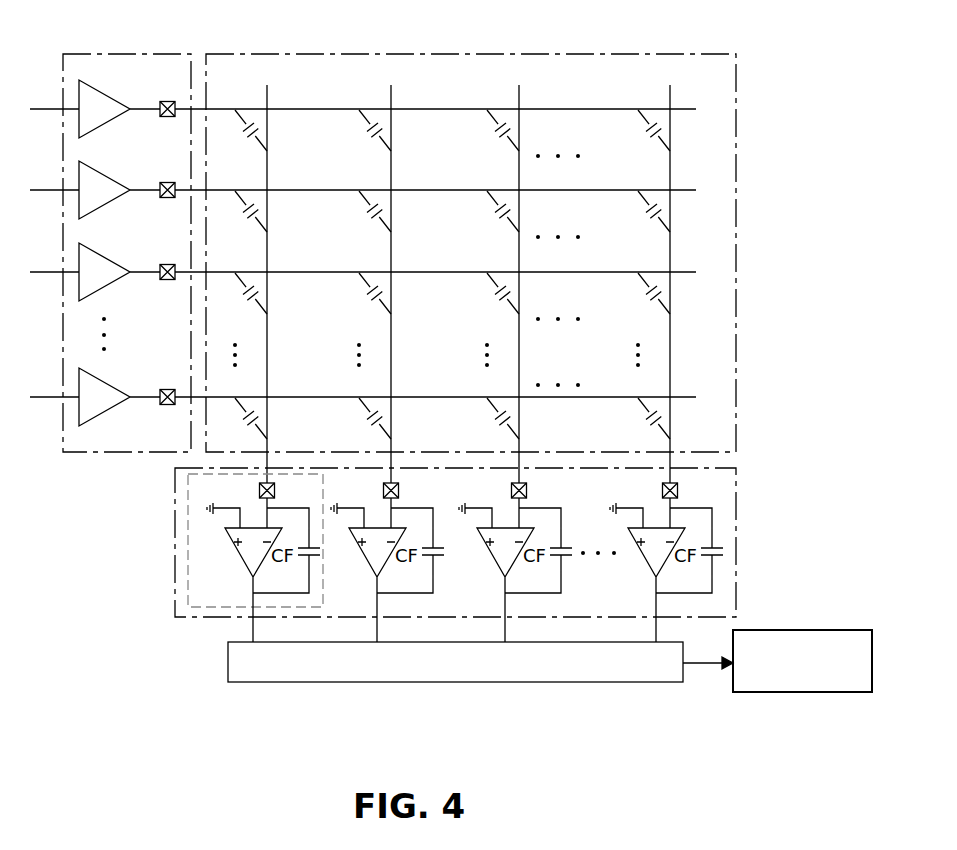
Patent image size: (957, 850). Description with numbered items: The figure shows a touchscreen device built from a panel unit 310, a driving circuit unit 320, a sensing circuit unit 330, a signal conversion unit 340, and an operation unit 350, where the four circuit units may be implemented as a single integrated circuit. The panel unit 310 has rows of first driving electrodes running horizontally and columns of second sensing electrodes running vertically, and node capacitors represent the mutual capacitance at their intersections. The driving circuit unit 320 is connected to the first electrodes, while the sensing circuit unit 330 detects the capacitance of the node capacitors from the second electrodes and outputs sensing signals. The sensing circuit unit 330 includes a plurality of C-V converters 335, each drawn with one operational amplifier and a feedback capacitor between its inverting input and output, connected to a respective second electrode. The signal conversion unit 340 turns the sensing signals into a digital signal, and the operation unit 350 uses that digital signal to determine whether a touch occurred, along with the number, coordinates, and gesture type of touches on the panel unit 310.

The panel unit 310 is at (488, 52).
The driving circuit unit 320 is at (125, 52).
The sensing circuit unit 330 is at (175, 545).
The C-V converter 335 is at (188, 575).
The signal conversion unit 340 is at (455, 685).
The operation unit 350 is at (800, 694).